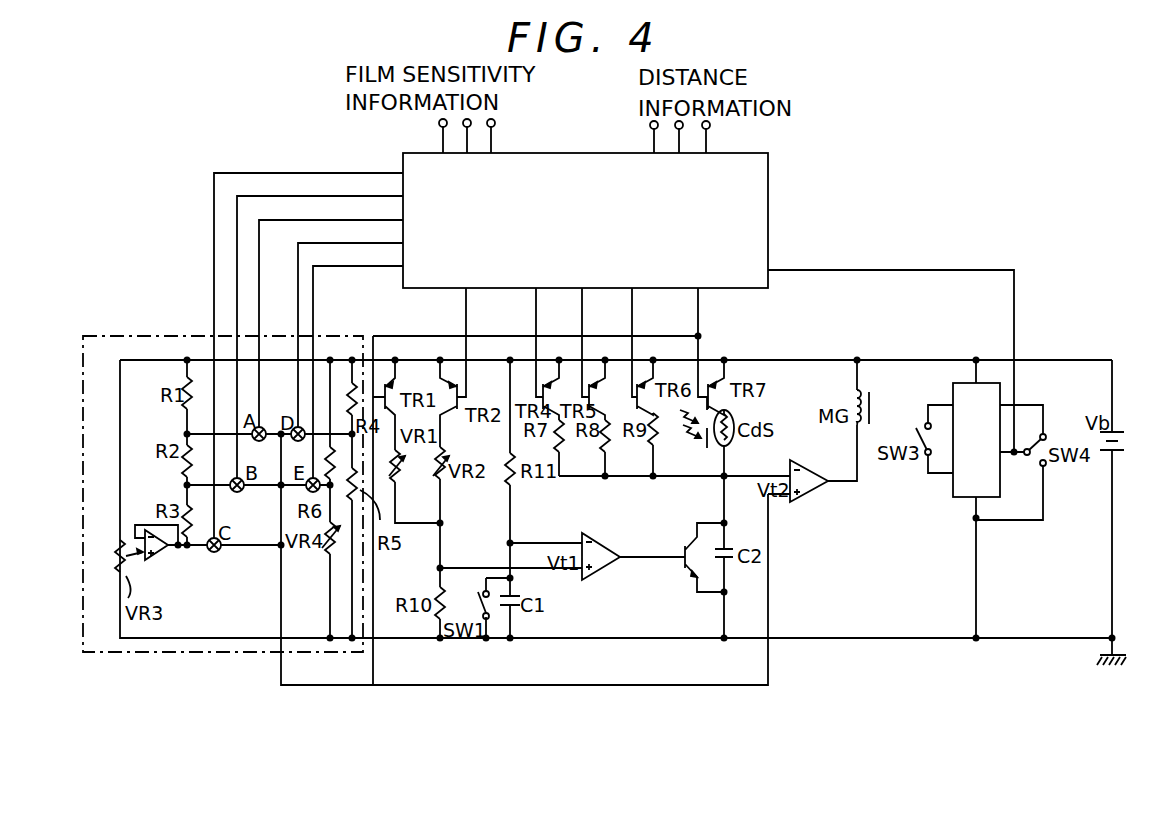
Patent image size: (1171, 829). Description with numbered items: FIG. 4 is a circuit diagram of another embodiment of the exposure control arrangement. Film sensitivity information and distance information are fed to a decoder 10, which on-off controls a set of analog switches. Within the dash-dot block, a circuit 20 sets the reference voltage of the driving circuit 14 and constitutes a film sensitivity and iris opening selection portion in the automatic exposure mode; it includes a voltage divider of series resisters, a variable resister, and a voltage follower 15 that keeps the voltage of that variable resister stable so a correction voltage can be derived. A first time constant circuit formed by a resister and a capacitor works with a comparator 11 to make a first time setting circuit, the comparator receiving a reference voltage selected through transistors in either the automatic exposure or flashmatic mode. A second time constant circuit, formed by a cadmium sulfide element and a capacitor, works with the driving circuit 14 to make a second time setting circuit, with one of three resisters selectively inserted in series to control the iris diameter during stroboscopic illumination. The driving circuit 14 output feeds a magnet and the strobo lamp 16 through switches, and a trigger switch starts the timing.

The decoder 10 is at (768, 192).
The comparator 11 is at (609, 578).
The driving circuit 14 is at (813, 504).
The voltage follower 15 is at (158, 558).
The strobo lamp 16 is at (952, 398).
The circuit for setting a reference voltage Vt2 20 is at (151, 337).